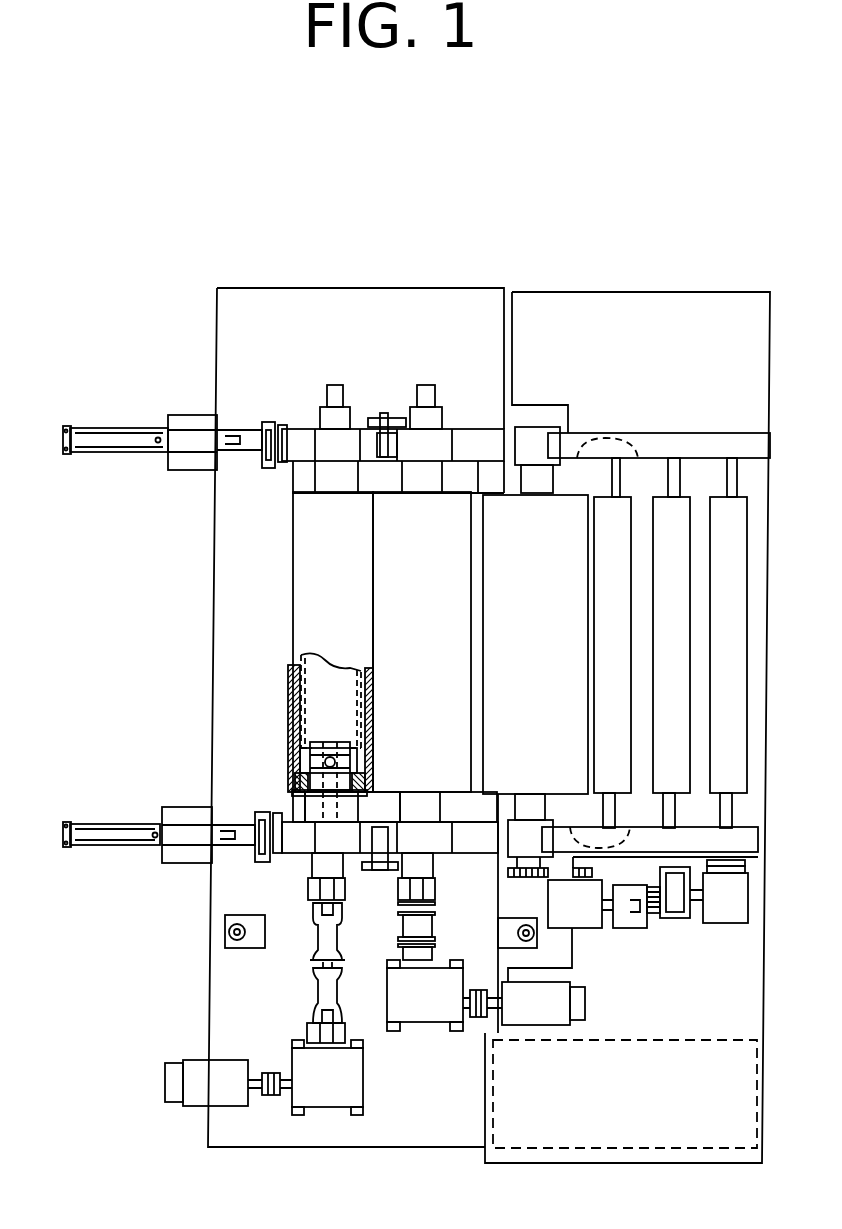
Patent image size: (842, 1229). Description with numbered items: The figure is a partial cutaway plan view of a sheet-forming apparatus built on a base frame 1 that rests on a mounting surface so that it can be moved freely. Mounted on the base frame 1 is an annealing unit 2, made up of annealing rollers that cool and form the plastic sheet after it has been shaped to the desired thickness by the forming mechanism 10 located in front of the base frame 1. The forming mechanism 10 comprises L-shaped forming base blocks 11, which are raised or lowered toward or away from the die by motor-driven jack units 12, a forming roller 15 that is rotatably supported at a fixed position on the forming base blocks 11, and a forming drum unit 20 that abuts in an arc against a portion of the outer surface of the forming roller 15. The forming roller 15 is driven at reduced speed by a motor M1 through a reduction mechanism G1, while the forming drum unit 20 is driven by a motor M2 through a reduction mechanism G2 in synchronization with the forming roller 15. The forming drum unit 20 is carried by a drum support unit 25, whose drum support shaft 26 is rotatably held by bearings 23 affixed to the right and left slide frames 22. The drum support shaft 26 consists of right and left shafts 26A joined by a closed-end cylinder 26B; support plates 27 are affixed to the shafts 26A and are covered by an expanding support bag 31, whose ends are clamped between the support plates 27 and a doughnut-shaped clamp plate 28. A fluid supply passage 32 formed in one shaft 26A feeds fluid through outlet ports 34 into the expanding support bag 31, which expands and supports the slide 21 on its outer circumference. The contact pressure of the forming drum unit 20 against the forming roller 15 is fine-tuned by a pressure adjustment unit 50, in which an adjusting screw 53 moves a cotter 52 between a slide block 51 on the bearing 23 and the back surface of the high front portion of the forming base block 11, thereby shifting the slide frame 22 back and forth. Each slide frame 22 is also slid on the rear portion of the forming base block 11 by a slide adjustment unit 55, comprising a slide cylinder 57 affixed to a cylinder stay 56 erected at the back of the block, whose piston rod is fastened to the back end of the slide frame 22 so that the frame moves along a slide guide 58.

The base frame 1 is at (400, 1135).
The annealing unit 2 is at (577, 425).
The forming mechanism 10 is at (262, 551).
The forming base blocks 11 is at (304, 429).
The jack units 12 is at (226, 934).
The forming roller 15 is at (418, 545).
The forming drum unit 20 is at (299, 642).
The slide 21 is at (308, 590).
The slide frames 22 is at (283, 403).
The bearings 23 is at (347, 803).
The drum support unit 25 is at (190, 737).
The drum support shaft 26 is at (217, 737).
The shafts 26A is at (316, 745).
The closed-end cylinder 26B is at (300, 708).
The support plates 27 is at (305, 782).
The clamp plate 28 is at (300, 803).
The expanding support bag 31 is at (297, 672).
The fluid supply passage 32 is at (315, 840).
The outlet ports 34 is at (338, 762).
The pressure adjustment unit 50 is at (395, 320).
The slide block 51 is at (368, 443).
The cotter 52 is at (388, 443).
The adjusting screw 53 is at (385, 443).
The slide adjustment unit 55 is at (140, 403).
The cylinder stay 56 is at (197, 415).
The slide cylinder 57 is at (115, 414).
The slide guide 58 is at (263, 422).
The reduction mechanism G1 is at (428, 1005).
The reduction mechanism G2 is at (330, 1095).
The motor M1 is at (540, 1008).
The motor M2 is at (225, 1090).